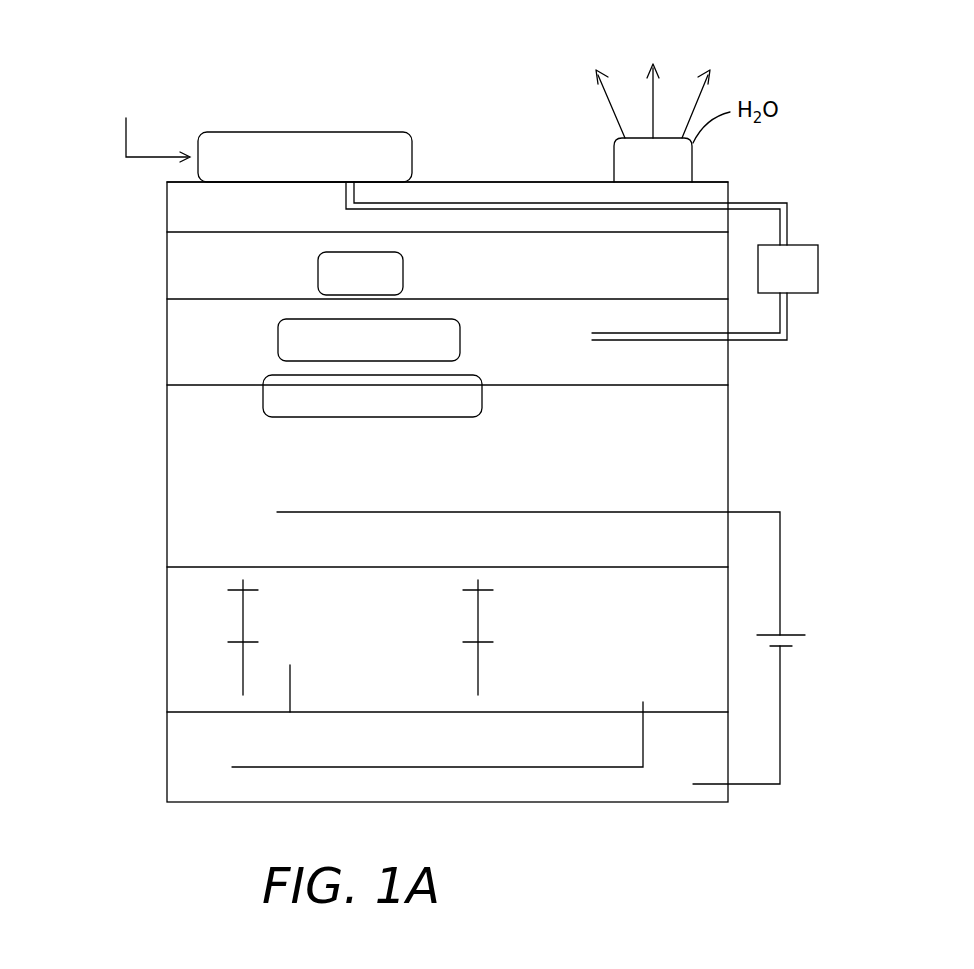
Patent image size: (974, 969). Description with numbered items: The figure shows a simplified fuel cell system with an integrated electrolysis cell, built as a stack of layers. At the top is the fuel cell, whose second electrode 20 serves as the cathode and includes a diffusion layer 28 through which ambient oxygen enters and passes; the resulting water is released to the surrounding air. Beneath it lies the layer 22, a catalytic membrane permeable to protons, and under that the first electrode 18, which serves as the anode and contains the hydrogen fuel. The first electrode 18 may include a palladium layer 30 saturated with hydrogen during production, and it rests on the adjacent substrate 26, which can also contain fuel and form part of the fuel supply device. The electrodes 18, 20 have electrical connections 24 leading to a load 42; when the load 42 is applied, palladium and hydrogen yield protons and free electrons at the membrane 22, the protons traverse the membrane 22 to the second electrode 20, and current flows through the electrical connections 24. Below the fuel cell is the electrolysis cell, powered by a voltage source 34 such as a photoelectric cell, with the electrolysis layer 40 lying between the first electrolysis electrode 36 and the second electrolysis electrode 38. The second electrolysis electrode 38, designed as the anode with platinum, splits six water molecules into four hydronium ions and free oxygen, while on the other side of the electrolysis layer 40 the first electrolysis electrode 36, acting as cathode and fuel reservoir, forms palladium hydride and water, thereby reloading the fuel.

The first electrode 18 is at (167, 355).
The second electrode 20 is at (167, 220).
The proton-permeable layer 22 is at (167, 278).
The electrical connections 24 is at (728, 203).
The substrate 26 is at (167, 488).
The diffusion layer 28 is at (317, 132).
The palladium layer 30 is at (482, 413).
The voltage source 34 is at (792, 633).
The first electrolysis electrode 36 is at (728, 541).
The second electrolysis electrode 38 is at (167, 770).
The electrolysis layer 40 is at (167, 657).
The load 42 is at (818, 245).